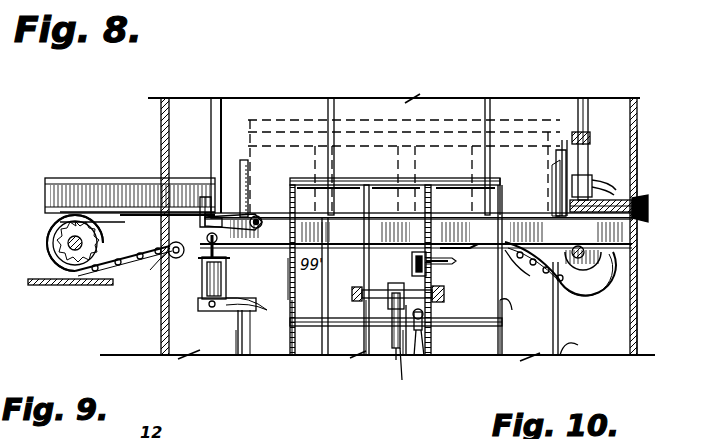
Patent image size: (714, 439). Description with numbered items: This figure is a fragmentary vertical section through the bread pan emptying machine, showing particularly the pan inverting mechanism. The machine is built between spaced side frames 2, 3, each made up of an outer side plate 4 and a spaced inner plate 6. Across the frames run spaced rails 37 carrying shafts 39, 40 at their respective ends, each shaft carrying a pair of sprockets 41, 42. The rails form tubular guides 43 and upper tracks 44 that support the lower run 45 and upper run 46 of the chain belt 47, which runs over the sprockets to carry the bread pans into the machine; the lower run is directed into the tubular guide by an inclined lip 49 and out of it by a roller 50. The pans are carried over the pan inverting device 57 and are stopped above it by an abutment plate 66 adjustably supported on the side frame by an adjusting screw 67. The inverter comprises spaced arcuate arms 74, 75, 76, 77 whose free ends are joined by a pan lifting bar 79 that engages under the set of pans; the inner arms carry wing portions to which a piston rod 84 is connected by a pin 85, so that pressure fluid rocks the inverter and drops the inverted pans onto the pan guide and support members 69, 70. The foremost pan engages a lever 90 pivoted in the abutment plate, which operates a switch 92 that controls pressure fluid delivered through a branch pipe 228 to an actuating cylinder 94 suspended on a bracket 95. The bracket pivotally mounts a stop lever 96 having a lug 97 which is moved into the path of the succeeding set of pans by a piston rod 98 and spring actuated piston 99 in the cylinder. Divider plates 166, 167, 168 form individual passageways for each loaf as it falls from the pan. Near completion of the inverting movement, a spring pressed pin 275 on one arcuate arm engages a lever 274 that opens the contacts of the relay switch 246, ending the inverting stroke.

The side frame 2 is at (160, 101).
The side frame 3 is at (638, 140).
The outer side plate 4 is at (638, 112).
The inner plate 6 is at (592, 94).
The rail 37 is at (157, 212).
The shaft 39 is at (590, 246).
The shaft 40 is at (66, 243).
The sprocket 41 is at (596, 262).
The sprocket 42 is at (56, 254).
The tubular guide 43 is at (133, 222).
The upper track 44 is at (168, 210).
The lower run 45 is at (113, 280).
The upper run 46 is at (97, 208).
The chain belt 47 is at (50, 225).
The inclined lip 49 is at (510, 250).
The roller 50 is at (158, 258).
The pan inverting device 57 is at (505, 305).
The abutment plate 66 is at (560, 160).
The adjusting screw 67 is at (645, 200).
The pan guide and support member 69 is at (331, 98).
The pan guide and support member 70 is at (485, 106).
The arcuate arm 74 is at (287, 332).
The arcuate arm 75 is at (367, 330).
The arcuate arm 76 is at (424, 357).
The arcuate arm 77 is at (500, 332).
The pan lifting bar 79 is at (494, 190).
The piston rod 84 is at (403, 330).
The pin 85 is at (353, 292).
The lever 90 is at (560, 193).
The switch 92 is at (590, 178).
The actuating cylinder 94 is at (204, 310).
The bracket 95 is at (270, 237).
The stop lever 96 is at (251, 197).
The lug 97 is at (211, 198).
The piston rod 98 is at (206, 250).
The piston 99 is at (202, 280).
The divider plate 166 is at (238, 344).
The divider plate 167 is at (402, 356).
The divider plate 168 is at (557, 340).
The branch pipe 228 is at (250, 332).
The relay switch 246 is at (455, 247).
The lever 274 is at (430, 268).
The spring pressed pin 275 is at (407, 356).